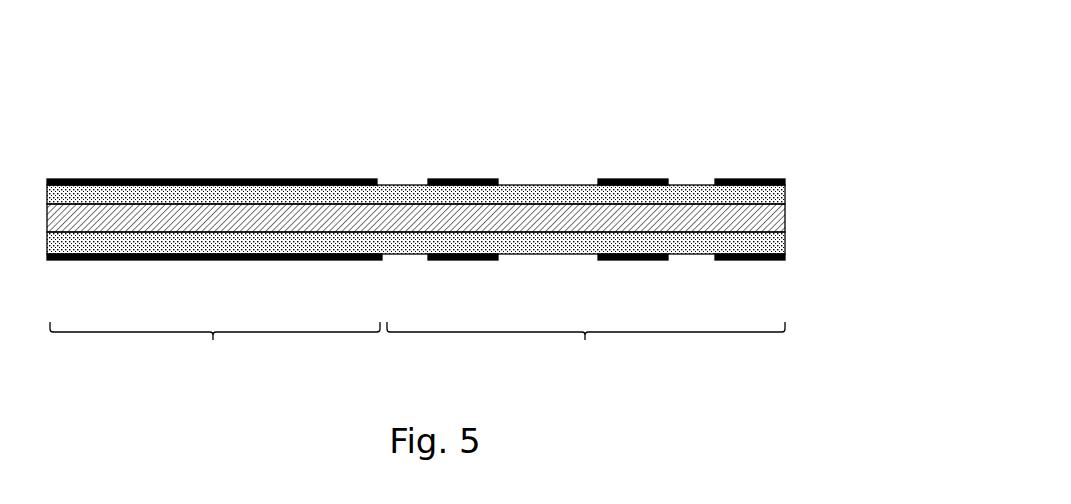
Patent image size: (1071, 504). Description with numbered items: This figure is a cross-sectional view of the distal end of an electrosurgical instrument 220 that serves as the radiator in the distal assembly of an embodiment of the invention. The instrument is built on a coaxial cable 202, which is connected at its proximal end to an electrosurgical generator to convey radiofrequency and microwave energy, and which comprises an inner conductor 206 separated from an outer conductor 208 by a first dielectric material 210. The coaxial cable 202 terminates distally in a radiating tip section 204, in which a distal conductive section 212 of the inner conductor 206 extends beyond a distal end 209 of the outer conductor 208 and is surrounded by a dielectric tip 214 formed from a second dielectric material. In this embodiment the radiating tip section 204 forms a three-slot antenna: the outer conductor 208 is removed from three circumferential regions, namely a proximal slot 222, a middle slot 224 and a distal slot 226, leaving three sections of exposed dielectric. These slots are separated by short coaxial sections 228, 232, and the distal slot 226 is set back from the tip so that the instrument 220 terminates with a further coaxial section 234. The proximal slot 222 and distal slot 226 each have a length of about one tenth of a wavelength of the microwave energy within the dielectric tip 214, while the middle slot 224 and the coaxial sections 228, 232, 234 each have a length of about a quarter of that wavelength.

The electrosurgical instrument 220 is at (730, 71).
The coaxial cable 202 is at (215, 346).
The radiating tip section 204 is at (586, 346).
The inner conductor 206 is at (123, 222).
The outer conductor 208 is at (203, 260).
The distal end of the outer conductor 209 is at (377, 177).
The first dielectric material 210 is at (187, 193).
The distal conductive section 212 is at (703, 220).
The dielectric tip 214 is at (562, 192).
The proximal slot 222 is at (406, 183).
The middle slot 224 is at (520, 184).
The distal slot 226 is at (685, 181).
The coaxial section 228 is at (462, 260).
The coaxial section 232 is at (633, 261).
The coaxial section 234 is at (752, 261).